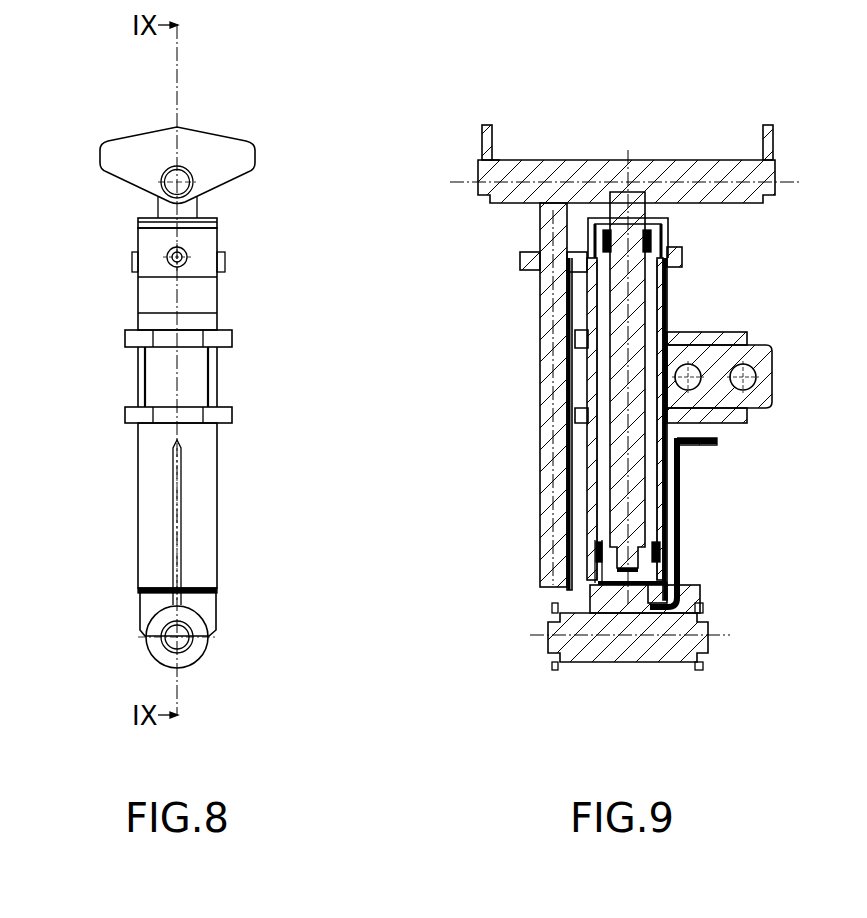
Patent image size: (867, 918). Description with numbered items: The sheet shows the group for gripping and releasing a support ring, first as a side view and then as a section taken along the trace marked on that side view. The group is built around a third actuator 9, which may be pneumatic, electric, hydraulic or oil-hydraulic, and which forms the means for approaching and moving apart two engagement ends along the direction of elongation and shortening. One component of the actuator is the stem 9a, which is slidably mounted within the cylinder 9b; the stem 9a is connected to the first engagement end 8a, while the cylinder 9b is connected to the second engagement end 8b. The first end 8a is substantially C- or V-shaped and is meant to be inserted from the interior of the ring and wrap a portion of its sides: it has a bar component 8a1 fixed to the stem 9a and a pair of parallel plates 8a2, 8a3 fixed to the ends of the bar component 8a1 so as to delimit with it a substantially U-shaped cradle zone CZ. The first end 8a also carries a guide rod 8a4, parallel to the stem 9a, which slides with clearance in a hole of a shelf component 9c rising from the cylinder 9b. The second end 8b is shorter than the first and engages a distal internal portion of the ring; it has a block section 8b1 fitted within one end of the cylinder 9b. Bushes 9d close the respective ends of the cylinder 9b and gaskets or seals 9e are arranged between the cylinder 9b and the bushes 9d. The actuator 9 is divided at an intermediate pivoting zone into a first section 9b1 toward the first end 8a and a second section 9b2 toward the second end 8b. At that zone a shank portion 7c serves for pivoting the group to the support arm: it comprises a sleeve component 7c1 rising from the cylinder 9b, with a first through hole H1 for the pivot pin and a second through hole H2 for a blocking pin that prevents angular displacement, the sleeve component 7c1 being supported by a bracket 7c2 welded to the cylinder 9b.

In FIG. 8, the first engagement end 8a is at (110, 142).
In FIG. 9, the bar component 8a1 is at (678, 158).
In FIG. 9, the plate 8a2 is at (482, 138).
In FIG. 9, the plate 8a3 is at (775, 140).
In FIG. 9, the guide rod 8a4 is at (540, 492).
In FIG. 8, the second engagement end 8b is at (152, 658).
In FIG. 9, the second engagement end 8b is at (643, 664).
In FIG. 9, the block section 8b1 is at (595, 618).
In FIG. 8, the third actuator 9 is at (139, 481).
In FIG. 9, the stem 9a is at (627, 322).
In FIG. 9, the cylinder 9b is at (588, 370).
In FIG. 9, the first section 9b1 is at (590, 288).
In FIG. 9, the second section 9b2 is at (588, 480).
In FIG. 9, the shelf component 9c is at (520, 262).
In FIG. 9, the bush 9d is at (670, 240).
In FIG. 9, the gasket or seal 9e is at (602, 232).
In FIG. 9, the shank portion 7c is at (763, 410).
In FIG. 9, the sleeve component 7c1 is at (770, 345).
In FIG. 9, the bracket 7c2 is at (747, 332).
In FIG. 9, the first opening or hole H1 is at (690, 390).
In FIG. 9, the second opening or hole H2 is at (757, 383).
In FIG. 9, the cradle zone CZ is at (493, 152).